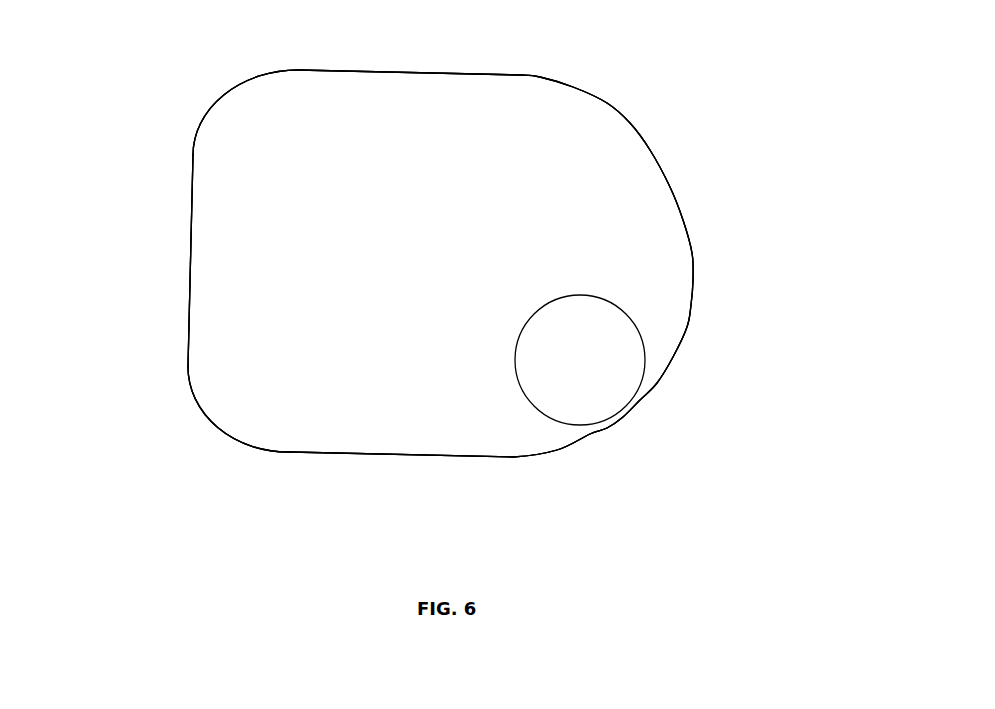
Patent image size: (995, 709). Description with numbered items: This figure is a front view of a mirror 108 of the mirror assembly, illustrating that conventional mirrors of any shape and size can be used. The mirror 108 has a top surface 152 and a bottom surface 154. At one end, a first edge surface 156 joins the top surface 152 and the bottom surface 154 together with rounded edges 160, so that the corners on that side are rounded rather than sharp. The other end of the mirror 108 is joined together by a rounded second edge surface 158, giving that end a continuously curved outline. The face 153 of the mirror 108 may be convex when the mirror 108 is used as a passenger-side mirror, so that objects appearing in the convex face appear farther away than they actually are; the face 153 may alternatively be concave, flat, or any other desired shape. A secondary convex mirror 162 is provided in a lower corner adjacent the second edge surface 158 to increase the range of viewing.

The mirror 108 is at (752, 138).
The top surface 152 is at (382, 72).
The face 153 is at (497, 96).
The bottom surface 154 is at (343, 452).
The first edge surface 156 is at (190, 282).
The second edge surface 158 is at (693, 258).
The rounded edges 160 is at (213, 105).
The secondary convex mirror 162 is at (585, 375).